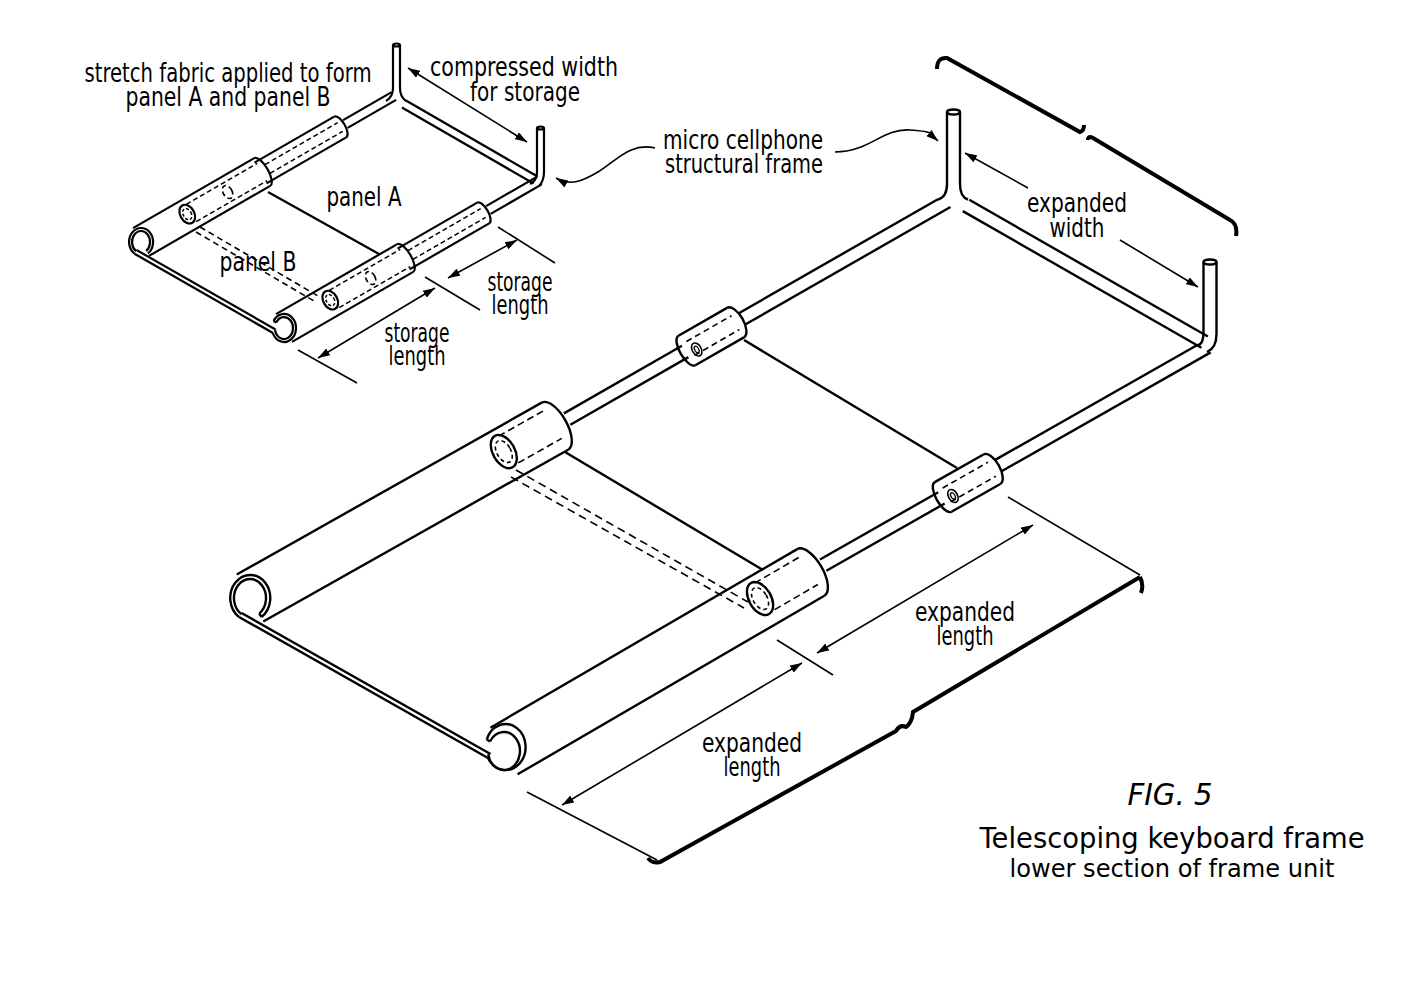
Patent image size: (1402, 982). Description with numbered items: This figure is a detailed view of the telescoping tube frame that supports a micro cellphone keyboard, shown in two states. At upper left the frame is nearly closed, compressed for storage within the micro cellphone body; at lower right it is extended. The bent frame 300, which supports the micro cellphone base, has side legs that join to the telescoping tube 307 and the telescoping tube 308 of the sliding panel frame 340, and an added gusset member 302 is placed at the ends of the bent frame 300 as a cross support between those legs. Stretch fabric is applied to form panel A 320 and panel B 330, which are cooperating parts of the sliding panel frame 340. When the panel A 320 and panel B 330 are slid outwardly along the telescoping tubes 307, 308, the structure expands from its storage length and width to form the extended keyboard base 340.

The bent frame 300 is at (1086, 147).
The gusset member 302 is at (1012, 239).
The telescoping tube 307 is at (1047, 431).
The telescoping tube 308 is at (875, 240).
The sliding panel A 320 is at (767, 504).
The sliding panel B 330 is at (523, 644).
The sliding panel frame 340 is at (895, 720).